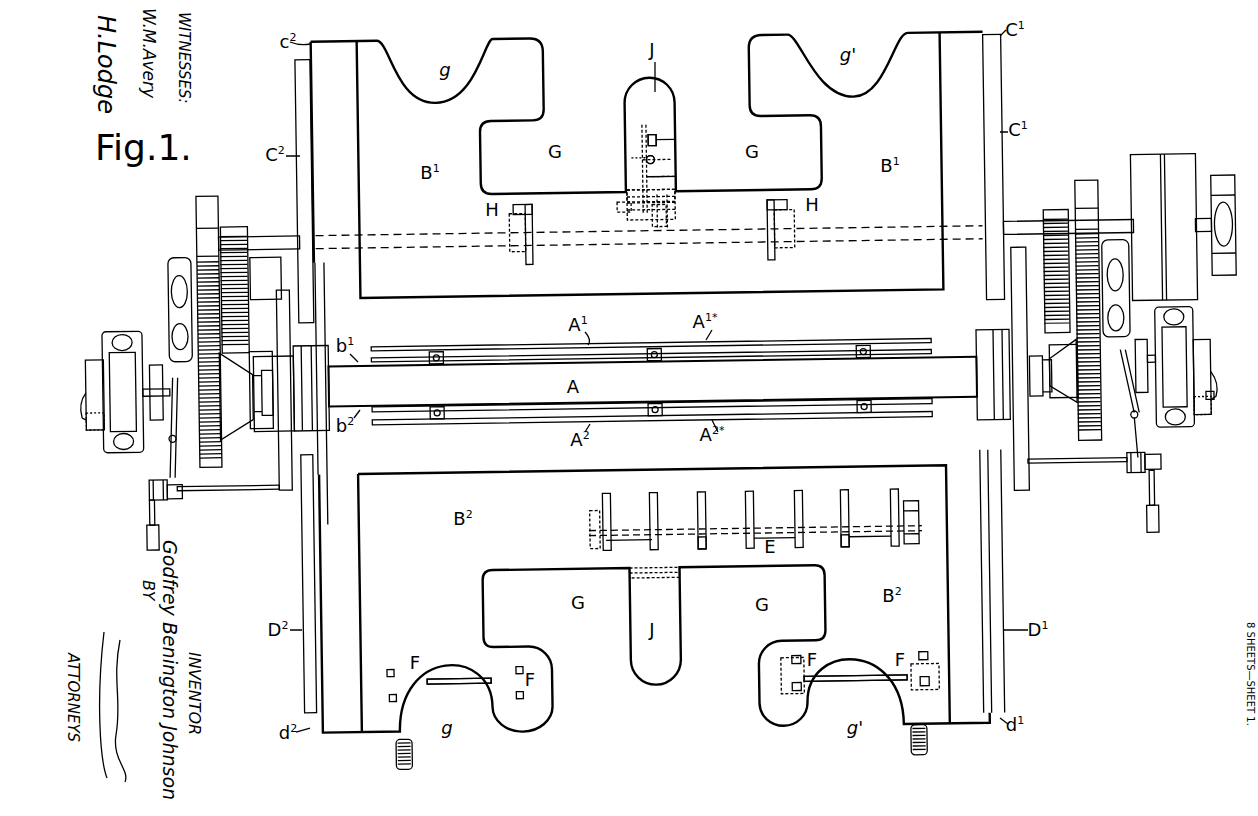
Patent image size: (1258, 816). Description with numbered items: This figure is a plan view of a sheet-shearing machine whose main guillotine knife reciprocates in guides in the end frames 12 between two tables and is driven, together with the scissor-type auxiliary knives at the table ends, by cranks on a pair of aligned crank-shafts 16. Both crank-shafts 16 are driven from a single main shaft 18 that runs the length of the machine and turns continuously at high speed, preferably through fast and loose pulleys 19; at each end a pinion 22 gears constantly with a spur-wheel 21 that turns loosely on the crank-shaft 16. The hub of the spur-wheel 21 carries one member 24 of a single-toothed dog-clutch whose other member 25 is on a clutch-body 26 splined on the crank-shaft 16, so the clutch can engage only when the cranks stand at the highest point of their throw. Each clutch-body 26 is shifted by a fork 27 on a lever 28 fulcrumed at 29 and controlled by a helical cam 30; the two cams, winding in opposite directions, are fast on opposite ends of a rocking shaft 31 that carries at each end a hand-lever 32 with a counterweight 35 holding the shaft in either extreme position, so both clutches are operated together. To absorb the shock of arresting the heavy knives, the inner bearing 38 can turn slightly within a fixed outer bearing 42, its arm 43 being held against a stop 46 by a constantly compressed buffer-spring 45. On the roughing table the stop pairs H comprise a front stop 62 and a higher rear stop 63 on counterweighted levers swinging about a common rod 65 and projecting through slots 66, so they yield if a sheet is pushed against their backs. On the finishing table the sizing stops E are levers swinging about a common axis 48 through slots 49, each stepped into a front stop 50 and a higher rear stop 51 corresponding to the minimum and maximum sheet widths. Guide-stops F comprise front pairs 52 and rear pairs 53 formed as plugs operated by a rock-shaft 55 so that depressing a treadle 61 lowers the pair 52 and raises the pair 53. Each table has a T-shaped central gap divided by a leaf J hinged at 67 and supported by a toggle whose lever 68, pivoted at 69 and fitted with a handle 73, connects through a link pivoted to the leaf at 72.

The end frame 12 is at (318, 382).
The crank-shaft 16 is at (145, 391).
The main shaft 18 is at (272, 240).
The fast and loose pulleys 19 is at (1180, 155).
The spur-wheel 21 is at (220, 446).
The pinion 22 is at (200, 313).
The dog-clutch member 24 is at (1110, 350).
The dog-clutch member 25 is at (1078, 385).
The clutch-body 26 is at (153, 366).
The fork 27 is at (174, 440).
The lever 28 is at (162, 470).
The fulcrum 29 is at (1128, 428).
The helical cam 30 is at (174, 500).
The rocking shaft 31 is at (234, 490).
The hand-lever 32 is at (148, 513).
The counterweight 35 is at (145, 538).
The inner bearing 38 is at (90, 372).
The outer bearing 42 is at (118, 335).
The arm 43 is at (86, 398).
The buffer-spring 45 is at (1216, 402).
The stop 46 is at (92, 430).
The axis 48 is at (722, 533).
The slot 49 is at (648, 500).
The front stop 50 is at (696, 512).
The rear stop 51 is at (696, 540).
The front guide-stop 52 is at (388, 664).
The rear guide-stop 53 is at (388, 699).
The rock-shaft 55 is at (452, 682).
The treadle 61 is at (391, 749).
The front stop 62 is at (536, 248).
The rear stop 63 is at (536, 216).
The rod 65 is at (620, 210).
The slot 66 is at (528, 258).
The hinge 67 is at (628, 196).
The lever 68 is at (676, 181).
The pivot 69 is at (655, 214).
The pivot 72 is at (678, 139).
The handle 73 is at (638, 160).